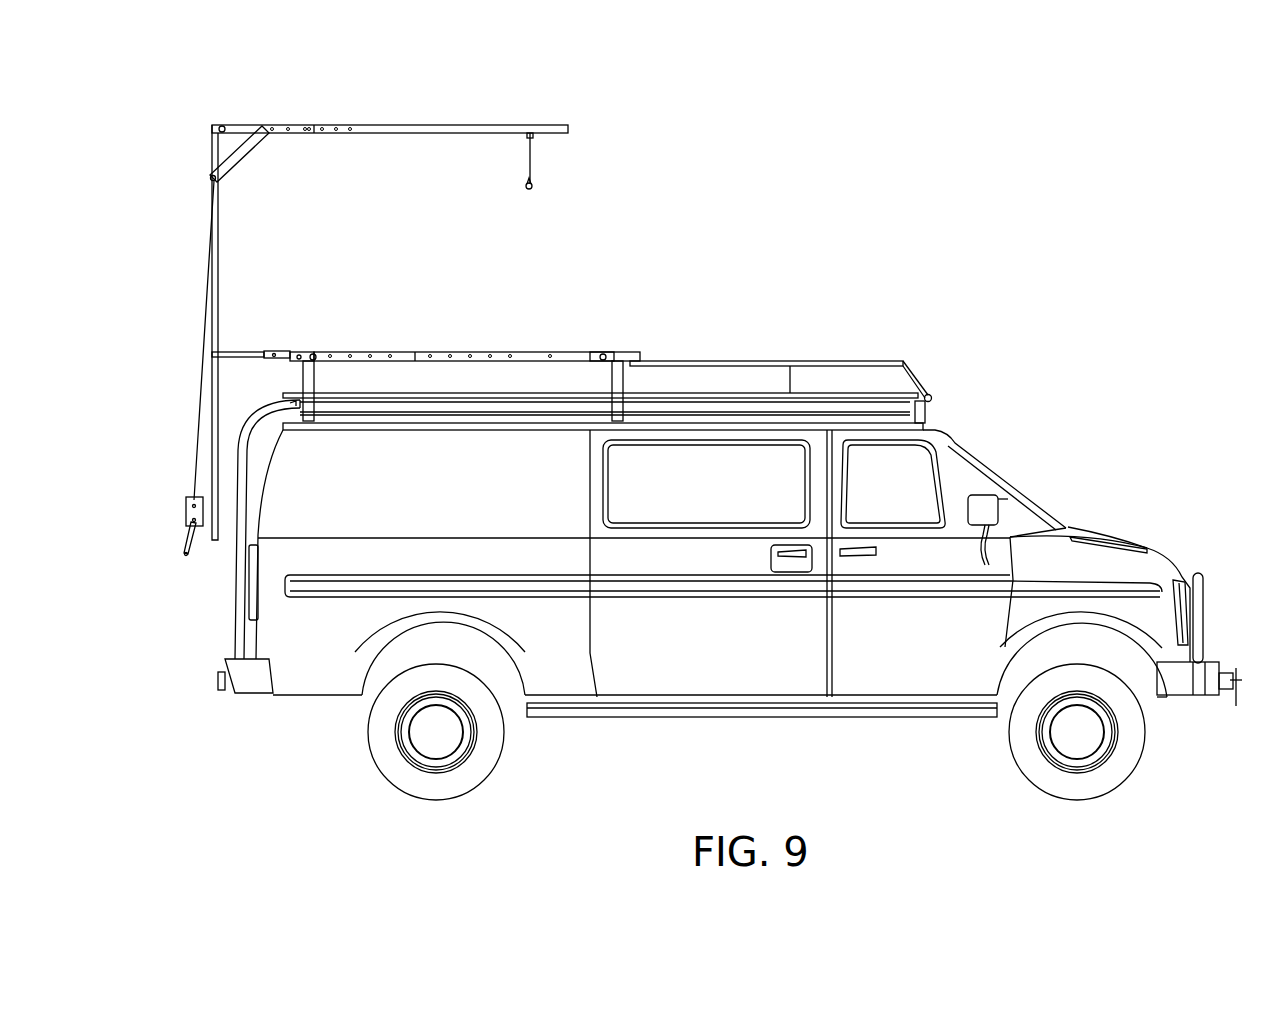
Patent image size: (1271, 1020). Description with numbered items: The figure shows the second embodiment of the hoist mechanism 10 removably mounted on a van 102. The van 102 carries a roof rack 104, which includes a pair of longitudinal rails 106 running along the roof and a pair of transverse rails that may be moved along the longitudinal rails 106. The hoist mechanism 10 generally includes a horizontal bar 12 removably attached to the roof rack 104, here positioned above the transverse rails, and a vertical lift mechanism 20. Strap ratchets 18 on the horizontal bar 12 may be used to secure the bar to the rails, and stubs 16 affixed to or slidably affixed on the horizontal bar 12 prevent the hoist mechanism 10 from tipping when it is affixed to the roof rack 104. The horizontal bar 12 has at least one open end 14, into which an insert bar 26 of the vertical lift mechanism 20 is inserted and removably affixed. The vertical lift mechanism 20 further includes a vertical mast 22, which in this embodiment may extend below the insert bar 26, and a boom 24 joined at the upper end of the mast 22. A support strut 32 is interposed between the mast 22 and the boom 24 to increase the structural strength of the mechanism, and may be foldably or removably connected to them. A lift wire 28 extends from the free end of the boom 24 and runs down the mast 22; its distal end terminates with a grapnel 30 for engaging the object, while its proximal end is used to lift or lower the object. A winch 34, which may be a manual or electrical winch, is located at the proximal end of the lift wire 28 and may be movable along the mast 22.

The hoist mechanism 10 is at (636, 218).
The horizontal bar 12 is at (530, 352).
The open end 14 is at (277, 352).
The stubs 16 is at (315, 352).
The strap ratchets 18 is at (300, 353).
The vertical lift mechanism 20 is at (382, 173).
The vertical mast 22 is at (216, 212).
The boom 24 is at (465, 125).
The insert bar 26 is at (236, 353).
The lift wire 28 is at (532, 150).
The grapnel 30 is at (532, 186).
The support strut 32 is at (240, 153).
The winch 34 is at (187, 520).
The van 102 is at (940, 650).
The roof rack 104 is at (836, 337).
The longitudinal rails 106 is at (711, 362).